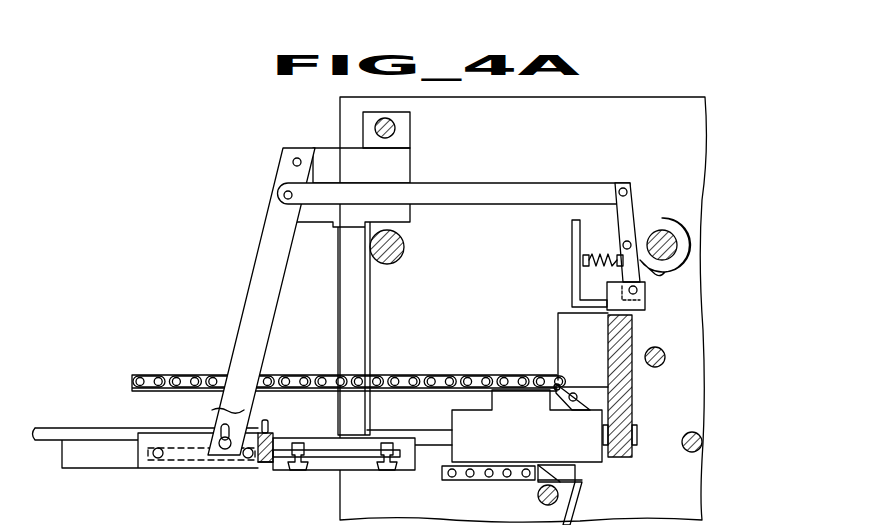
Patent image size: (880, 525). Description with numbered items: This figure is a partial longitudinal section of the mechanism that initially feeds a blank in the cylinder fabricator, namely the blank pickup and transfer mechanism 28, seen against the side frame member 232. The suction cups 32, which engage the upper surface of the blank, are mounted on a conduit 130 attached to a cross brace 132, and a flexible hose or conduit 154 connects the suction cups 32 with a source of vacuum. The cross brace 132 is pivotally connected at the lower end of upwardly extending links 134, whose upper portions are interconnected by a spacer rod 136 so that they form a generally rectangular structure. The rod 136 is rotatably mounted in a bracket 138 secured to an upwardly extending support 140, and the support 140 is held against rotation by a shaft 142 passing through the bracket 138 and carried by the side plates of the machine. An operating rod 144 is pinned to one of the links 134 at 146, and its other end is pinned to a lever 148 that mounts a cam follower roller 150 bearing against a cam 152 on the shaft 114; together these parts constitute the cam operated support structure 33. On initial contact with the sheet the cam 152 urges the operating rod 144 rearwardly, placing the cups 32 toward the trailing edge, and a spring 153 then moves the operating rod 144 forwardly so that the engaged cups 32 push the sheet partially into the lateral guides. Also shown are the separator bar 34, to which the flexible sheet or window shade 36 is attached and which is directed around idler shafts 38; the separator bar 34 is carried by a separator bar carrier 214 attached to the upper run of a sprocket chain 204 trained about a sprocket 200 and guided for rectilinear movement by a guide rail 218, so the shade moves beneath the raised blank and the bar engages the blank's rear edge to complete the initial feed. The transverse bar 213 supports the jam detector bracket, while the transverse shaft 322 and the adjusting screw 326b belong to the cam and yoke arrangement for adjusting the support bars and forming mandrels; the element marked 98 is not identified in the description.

The blank pickup and transfer mechanism 28 is at (165, 432).
The suction cups 32 is at (298, 471).
The cam operated support structure 33 is at (452, 181).
The separator bar 34 is at (555, 478).
The flexible sheets 36 is at (585, 505).
The idler shafts 38 is at (538, 497).
The pivot pin 98 is at (405, 247).
The shaft 114 is at (678, 245).
The conduit 130 is at (333, 450).
The cross brace 132 is at (262, 470).
The links 134 is at (262, 249).
The spacer rod 136 is at (292, 162).
The bracket 138 is at (317, 148).
The support 140 is at (357, 298).
The shaft 142 is at (397, 128).
The operating rod 144 is at (515, 183).
The pin connection 146 is at (284, 195).
The lever 148 is at (632, 190).
The cam follower roller 150 is at (623, 240).
The cam 152 is at (672, 225).
The spring 153 is at (605, 262).
The flexible conduit 154 is at (268, 420).
The sprocket 200 is at (558, 385).
The sprocket chain 204 is at (424, 359).
The transverse bar 213 is at (627, 416).
The separator bar carrier 214 is at (500, 447).
The guide rail 218 is at (432, 429).
The side frame member 232 is at (640, 97).
The transverse shaft 322 is at (699, 435).
The adjusting screw 326b is at (667, 357).